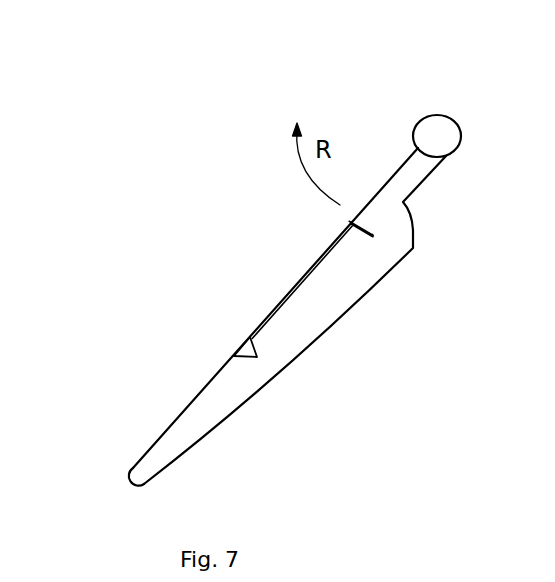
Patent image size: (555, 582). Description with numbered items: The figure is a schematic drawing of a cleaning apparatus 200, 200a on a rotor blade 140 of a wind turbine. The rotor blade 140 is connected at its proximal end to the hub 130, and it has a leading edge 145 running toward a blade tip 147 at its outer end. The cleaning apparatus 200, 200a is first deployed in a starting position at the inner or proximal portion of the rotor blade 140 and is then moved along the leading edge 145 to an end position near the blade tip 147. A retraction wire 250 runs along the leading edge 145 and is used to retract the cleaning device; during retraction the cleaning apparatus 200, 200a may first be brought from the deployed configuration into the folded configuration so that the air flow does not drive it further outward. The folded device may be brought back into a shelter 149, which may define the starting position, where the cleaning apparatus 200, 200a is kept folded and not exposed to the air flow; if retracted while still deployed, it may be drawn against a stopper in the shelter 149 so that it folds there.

The hub 130 is at (440, 118).
The rotor blade 140 is at (278, 317).
The leading edge 145 is at (183, 411).
The blade tip 147 is at (133, 468).
The shelter 149 is at (364, 238).
The retraction wire 250 is at (279, 303).
The cleaning apparatus 200 is at (202, 300).
The cleaning apparatus 200a is at (233, 340).